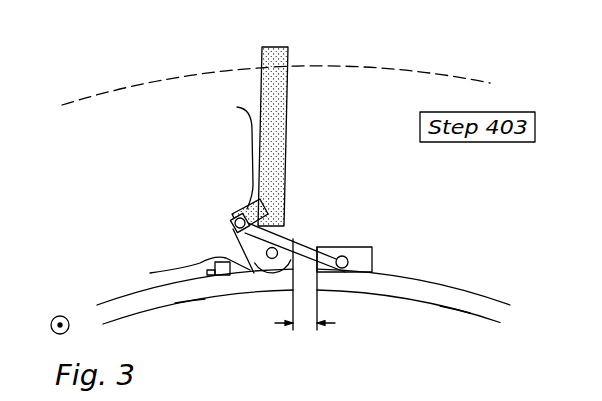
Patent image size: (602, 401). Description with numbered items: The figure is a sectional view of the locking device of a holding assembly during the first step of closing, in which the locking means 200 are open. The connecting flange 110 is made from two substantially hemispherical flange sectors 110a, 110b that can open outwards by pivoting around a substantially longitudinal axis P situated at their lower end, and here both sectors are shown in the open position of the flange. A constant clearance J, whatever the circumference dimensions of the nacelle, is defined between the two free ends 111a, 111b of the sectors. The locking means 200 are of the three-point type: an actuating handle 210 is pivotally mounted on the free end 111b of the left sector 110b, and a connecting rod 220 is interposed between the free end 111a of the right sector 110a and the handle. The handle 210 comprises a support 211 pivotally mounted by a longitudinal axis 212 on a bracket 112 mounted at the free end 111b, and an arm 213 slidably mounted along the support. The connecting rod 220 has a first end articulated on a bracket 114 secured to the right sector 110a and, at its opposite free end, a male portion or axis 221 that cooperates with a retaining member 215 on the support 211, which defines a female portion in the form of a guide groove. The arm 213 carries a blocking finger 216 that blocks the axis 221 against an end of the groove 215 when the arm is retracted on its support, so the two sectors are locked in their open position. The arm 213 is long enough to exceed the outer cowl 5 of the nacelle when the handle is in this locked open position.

The outer cowl 5 is at (112, 91).
The connecting flange 110 is at (464, 282).
The flange sector 110a is at (450, 308).
The flange sector 110b is at (188, 301).
The free end 111a is at (328, 296).
The free end 111b is at (284, 296).
The bracket 112 is at (150, 273).
The bracket 114 is at (362, 262).
The locking means 200 is at (212, 209).
The actuating handle 210 is at (240, 190).
The support 211 is at (230, 226).
The longitudinal axis 212 is at (272, 253).
The arm 213 is at (275, 100).
The retaining member 215 is at (226, 153).
The blocking finger 216 is at (240, 205).
The connecting rod 220 is at (314, 237).
The male portion 221 is at (233, 221).
The clearance J is at (305, 335).
The longitudinal axis P is at (54, 312).